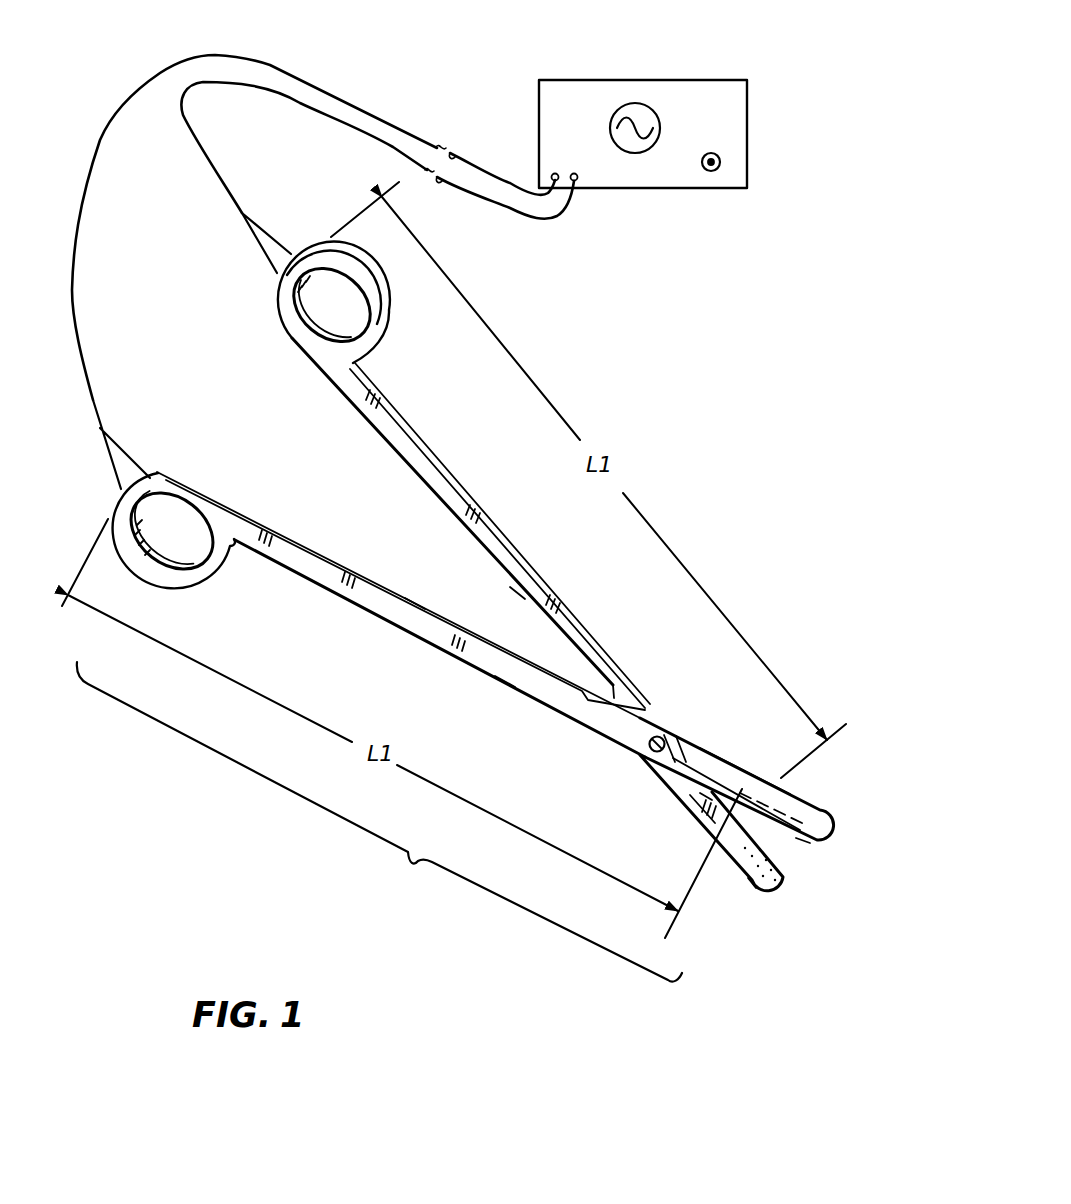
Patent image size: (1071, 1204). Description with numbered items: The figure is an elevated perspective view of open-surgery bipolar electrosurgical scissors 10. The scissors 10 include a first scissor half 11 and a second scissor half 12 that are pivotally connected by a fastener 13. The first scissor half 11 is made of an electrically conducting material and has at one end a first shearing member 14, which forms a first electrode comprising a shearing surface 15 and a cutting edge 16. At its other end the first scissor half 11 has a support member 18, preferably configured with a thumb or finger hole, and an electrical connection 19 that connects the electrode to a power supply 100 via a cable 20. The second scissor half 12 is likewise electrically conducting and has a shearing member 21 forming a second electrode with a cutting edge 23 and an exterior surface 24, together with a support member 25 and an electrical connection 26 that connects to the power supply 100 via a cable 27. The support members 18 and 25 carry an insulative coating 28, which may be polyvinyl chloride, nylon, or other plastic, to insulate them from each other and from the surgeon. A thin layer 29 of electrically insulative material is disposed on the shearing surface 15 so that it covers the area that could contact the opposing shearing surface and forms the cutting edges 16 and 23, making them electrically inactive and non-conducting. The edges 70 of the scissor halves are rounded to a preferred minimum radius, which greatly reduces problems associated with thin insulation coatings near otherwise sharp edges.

The scissors 10 is at (379, 822).
The first scissor half 11 is at (379, 393).
The second scissor half 12 is at (265, 527).
The fastener 13 is at (658, 736).
The first shearing member 14 is at (708, 826).
The shearing surface 15 is at (700, 795).
The cutting edge 16 is at (770, 853).
The support member 18 is at (517, 582).
The electrical connection 19 is at (247, 231).
The cable 20 is at (207, 160).
The shearing member 21 is at (793, 793).
The cutting edge 23 is at (798, 843).
The exterior surface 24 is at (708, 766).
The support member 25 is at (410, 599).
The electrical connection 26 is at (110, 462).
The cable 27 is at (76, 345).
The insulative coating 28 is at (504, 676).
The thin layer of electrically insulative material 29 is at (751, 884).
The edges 70 is at (233, 484).
The power supply 100 is at (660, 86).